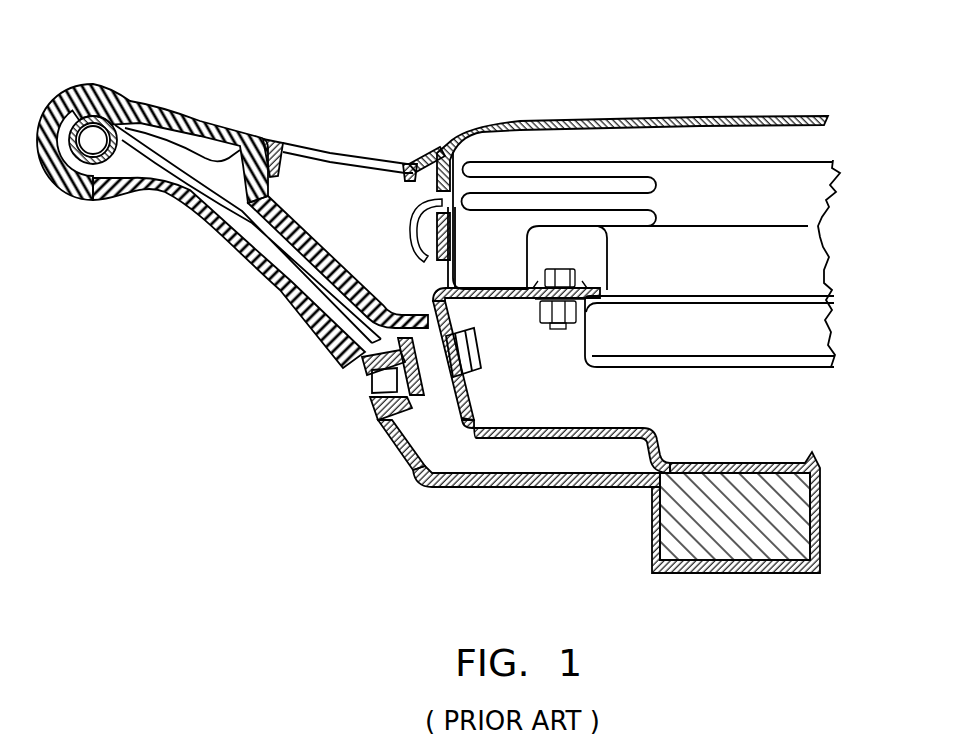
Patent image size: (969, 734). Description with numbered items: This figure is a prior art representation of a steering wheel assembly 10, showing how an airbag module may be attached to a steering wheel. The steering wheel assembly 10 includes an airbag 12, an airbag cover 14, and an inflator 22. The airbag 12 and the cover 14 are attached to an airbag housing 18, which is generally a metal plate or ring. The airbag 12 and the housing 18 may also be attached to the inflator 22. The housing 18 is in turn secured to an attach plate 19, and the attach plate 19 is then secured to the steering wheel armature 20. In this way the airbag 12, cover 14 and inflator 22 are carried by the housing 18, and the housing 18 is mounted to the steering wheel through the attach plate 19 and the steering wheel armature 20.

The steering wheel assembly 10 is at (415, 127).
The airbag 12 is at (612, 170).
The airbag cover 14 is at (538, 120).
The airbag housing 18 is at (418, 230).
The attach plate 19 is at (433, 305).
The steering wheel armature 20 is at (557, 428).
The inflator 22 is at (777, 263).